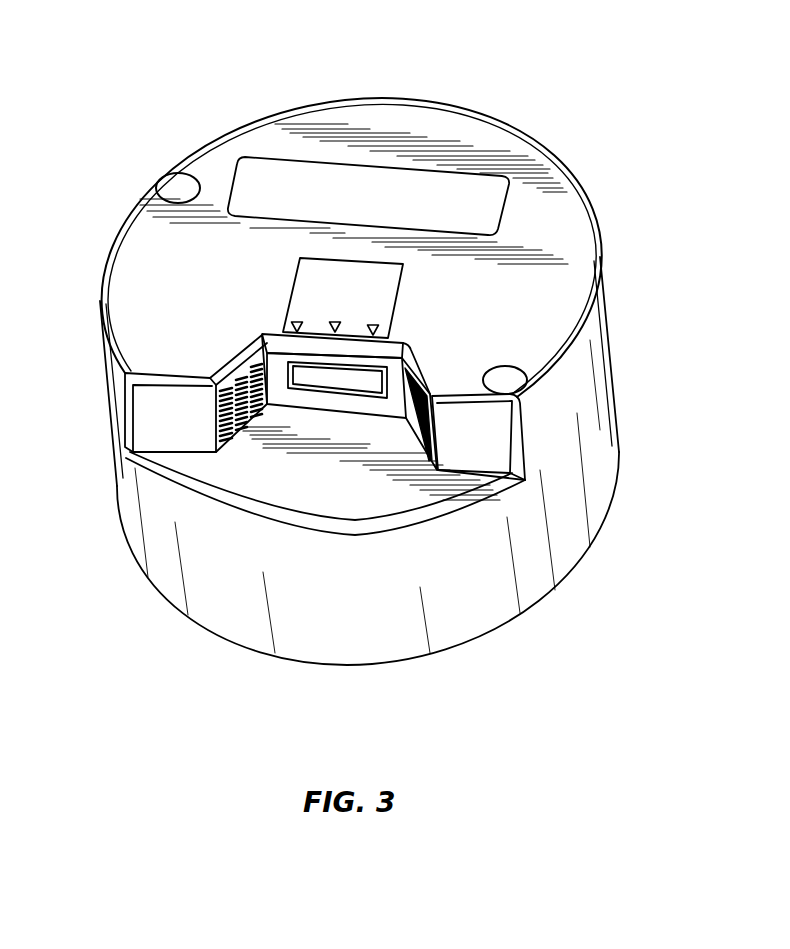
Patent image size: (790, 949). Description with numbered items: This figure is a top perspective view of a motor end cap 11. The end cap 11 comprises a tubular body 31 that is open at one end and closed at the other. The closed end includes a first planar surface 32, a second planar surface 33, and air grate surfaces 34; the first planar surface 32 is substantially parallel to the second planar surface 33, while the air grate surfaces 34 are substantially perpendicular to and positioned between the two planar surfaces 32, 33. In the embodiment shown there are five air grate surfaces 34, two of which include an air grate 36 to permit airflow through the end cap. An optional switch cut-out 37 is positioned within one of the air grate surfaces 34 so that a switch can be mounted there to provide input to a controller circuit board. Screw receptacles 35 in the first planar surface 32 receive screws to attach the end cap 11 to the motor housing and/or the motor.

The end cap 11 is at (578, 68).
The tubular body 31 is at (597, 381).
The first planar surface 32 is at (542, 223).
The second planar surface 33 is at (417, 490).
The air grate surface 34 is at (424, 366).
The screw receptacle 35 is at (176, 187).
The air grate 36 is at (256, 426).
The switch cut-out 37 is at (335, 375).